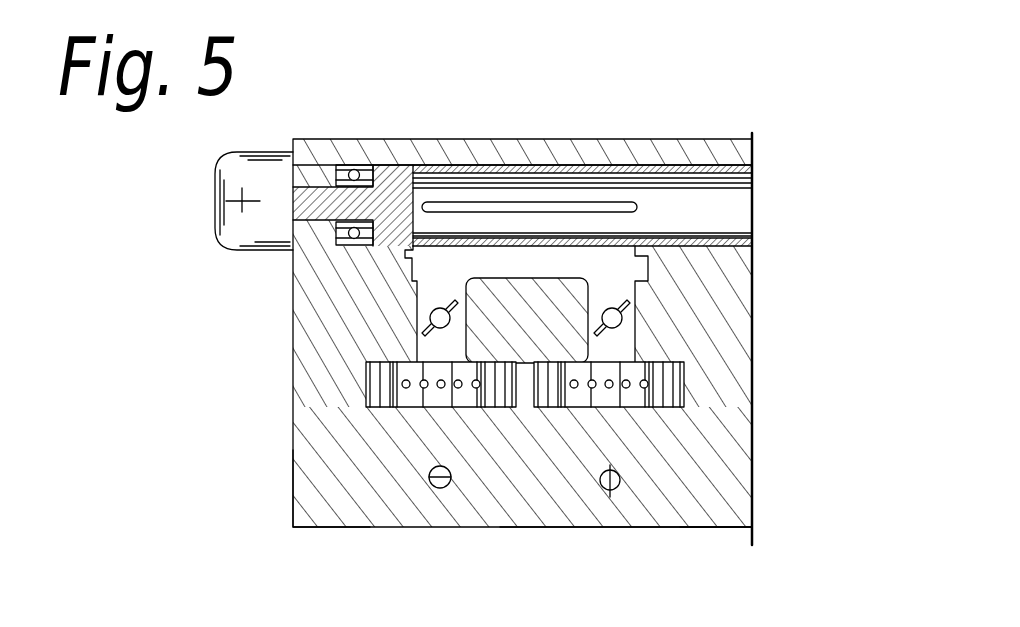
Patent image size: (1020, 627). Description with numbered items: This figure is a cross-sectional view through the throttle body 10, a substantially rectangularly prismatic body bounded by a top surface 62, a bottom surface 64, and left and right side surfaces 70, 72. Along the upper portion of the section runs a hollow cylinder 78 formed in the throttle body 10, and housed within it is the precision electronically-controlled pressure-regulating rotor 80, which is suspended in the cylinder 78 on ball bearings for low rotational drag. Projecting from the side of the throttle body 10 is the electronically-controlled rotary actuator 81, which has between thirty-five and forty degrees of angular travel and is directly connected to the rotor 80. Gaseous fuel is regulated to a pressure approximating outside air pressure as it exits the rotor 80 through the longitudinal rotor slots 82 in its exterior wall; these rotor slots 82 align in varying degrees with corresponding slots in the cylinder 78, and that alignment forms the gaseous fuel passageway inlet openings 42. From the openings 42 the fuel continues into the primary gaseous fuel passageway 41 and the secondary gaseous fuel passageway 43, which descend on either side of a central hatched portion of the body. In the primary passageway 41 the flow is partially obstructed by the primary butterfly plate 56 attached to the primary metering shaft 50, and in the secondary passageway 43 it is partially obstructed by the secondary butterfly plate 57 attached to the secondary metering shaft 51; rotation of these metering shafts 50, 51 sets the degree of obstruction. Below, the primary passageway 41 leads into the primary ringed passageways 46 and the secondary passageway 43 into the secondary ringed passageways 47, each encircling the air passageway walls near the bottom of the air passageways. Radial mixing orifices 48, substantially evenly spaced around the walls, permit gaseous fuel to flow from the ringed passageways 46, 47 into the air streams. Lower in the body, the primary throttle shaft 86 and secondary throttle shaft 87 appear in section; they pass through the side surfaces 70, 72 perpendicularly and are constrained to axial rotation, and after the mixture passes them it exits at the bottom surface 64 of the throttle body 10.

The throttle body 10 is at (752, 410).
The primary gaseous fuel passageway 41 is at (437, 272).
The gaseous fuel passageway inlet openings 42 is at (603, 215).
The secondary gaseous fuel passageway 43 is at (612, 270).
The primary ringed passageways 46 is at (380, 385).
The secondary ringed passageways 47 is at (673, 402).
The radial mixing orifices 48 is at (420, 388).
The primary metering shaft 50 is at (432, 316).
The secondary metering shaft 51 is at (624, 317).
The primary gaseous fuel passageway butterfly plate 56 is at (422, 332).
The secondary gaseous fuel passageway butterfly plate 57 is at (628, 338).
The top surface 62 is at (600, 139).
The bottom surface 64 is at (692, 528).
The left side surface 70 is at (293, 500).
The right side surface 72 is at (752, 515).
The hollow cylinder 78 is at (395, 172).
The pressure-regulating rotor 80 is at (752, 207).
The electronically-controlled rotary actuator 81 is at (245, 201).
The longitudinal rotor slots 82 is at (482, 203).
The primary throttle shaft 86 is at (437, 488).
The secondary throttle shaft 87 is at (607, 492).